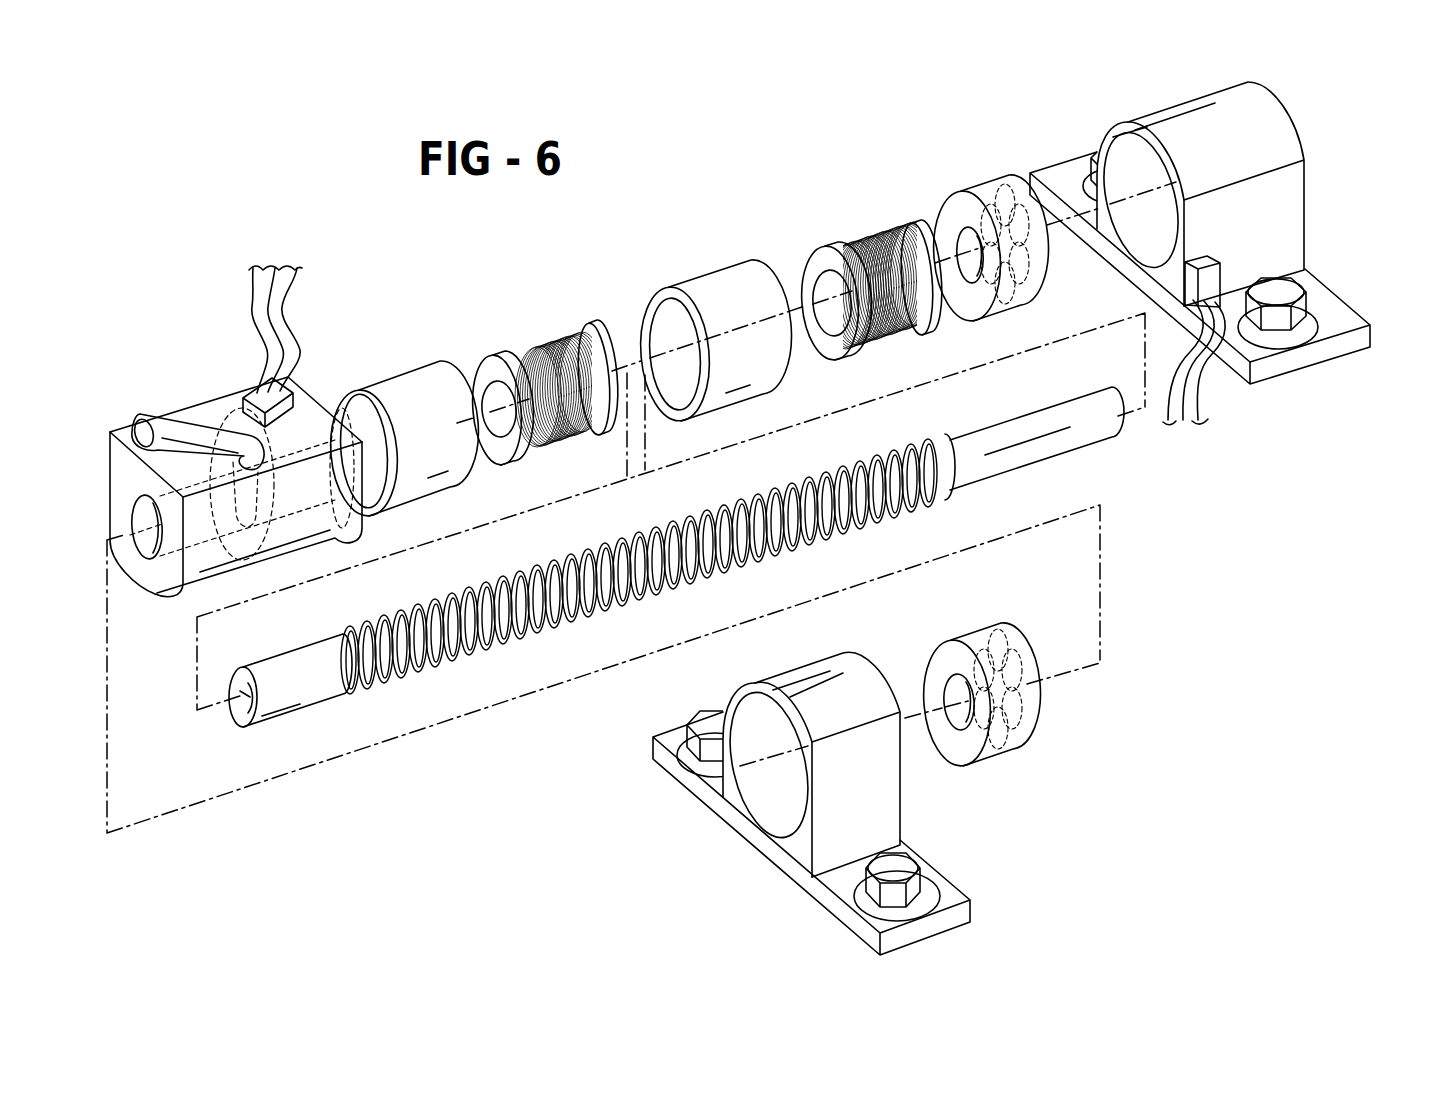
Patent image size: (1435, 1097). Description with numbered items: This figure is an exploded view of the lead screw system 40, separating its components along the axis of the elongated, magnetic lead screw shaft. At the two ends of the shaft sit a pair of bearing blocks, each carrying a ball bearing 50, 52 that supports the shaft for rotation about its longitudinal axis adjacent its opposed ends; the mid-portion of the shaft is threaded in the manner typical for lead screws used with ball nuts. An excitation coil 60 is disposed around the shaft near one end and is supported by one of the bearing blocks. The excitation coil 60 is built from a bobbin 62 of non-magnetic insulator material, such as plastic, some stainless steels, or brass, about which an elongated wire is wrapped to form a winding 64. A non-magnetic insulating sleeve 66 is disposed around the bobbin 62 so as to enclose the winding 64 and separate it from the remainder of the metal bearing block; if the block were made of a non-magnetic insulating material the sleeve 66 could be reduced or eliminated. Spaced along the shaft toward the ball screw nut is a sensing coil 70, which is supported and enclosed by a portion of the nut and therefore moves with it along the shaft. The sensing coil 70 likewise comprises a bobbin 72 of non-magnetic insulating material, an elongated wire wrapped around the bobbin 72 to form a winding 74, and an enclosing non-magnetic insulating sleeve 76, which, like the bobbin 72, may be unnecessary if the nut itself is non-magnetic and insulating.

The lead screw system 40 is at (1357, 62).
The ball bearing 50 is at (1007, 187).
The ball bearing 52 is at (1030, 723).
The excitation coil 60 is at (851, 302).
The bobbin 62 is at (810, 262).
The winding 64 is at (867, 247).
The non-magnetic insulating sleeve 66 is at (723, 287).
The sensing coil 70 is at (542, 352).
The bobbin 72 is at (588, 331).
The winding 74 is at (550, 345).
The non-magnetic insulating sleeve 76 is at (425, 377).